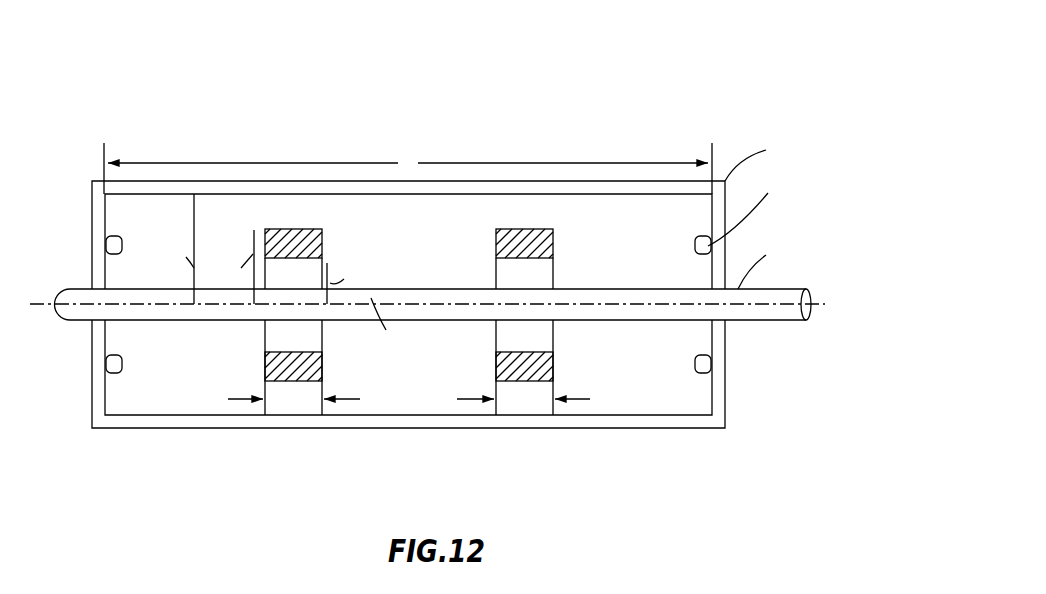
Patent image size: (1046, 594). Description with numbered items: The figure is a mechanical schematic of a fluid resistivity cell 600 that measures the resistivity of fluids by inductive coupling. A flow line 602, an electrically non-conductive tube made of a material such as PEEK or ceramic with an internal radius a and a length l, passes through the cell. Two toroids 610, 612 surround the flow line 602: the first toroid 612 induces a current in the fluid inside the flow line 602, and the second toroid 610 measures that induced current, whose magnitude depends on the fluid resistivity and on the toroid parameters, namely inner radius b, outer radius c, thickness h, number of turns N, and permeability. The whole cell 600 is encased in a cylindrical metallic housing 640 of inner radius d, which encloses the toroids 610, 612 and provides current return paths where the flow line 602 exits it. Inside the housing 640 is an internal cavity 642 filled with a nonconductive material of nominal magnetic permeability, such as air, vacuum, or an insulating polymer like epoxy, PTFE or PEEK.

The fluid resistivity cell 600 is at (232, 122).
The flow line 602 is at (787, 321).
The second toroid 610 is at (553, 368).
The first toroid 612 is at (266, 366).
The metallic housing 640 is at (595, 428).
The internal cavity 642 is at (407, 392).